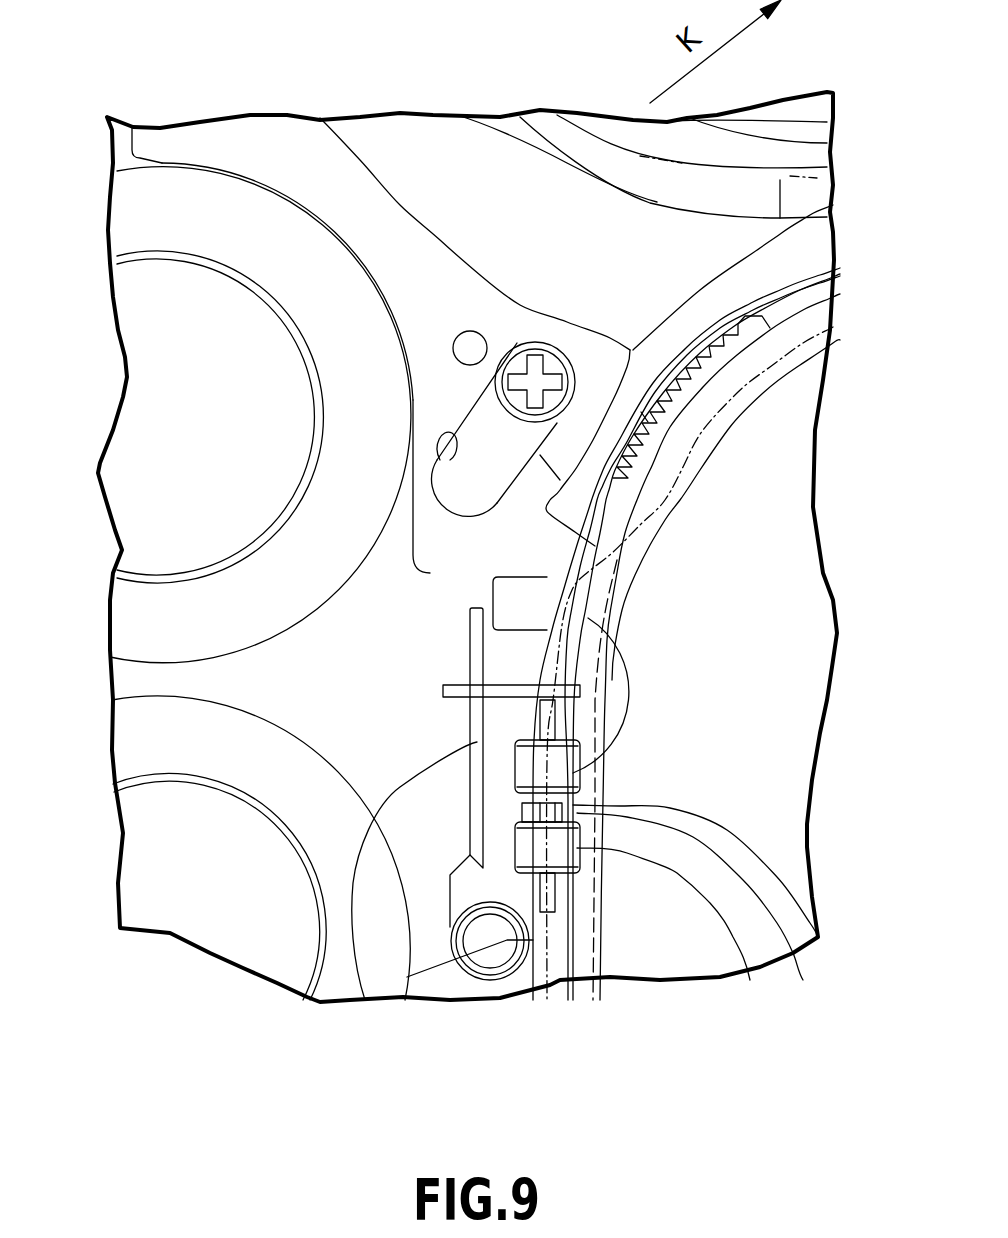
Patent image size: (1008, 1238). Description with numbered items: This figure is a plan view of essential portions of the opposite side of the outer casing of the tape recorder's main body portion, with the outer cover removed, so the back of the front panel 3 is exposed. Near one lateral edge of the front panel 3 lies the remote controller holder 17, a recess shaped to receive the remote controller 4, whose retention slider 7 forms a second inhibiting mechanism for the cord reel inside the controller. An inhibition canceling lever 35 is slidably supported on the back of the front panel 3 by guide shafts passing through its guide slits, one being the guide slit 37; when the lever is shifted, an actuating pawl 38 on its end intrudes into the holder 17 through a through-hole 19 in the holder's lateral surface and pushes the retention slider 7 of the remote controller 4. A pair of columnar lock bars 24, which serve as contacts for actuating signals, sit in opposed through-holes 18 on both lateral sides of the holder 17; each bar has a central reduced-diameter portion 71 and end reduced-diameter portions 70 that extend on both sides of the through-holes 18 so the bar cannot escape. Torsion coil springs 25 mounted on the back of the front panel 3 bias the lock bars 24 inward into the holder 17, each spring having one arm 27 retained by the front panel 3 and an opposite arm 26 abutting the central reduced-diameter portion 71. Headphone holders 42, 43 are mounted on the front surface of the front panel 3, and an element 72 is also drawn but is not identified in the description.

The front panel 3 is at (420, 130).
The remote controller 4 is at (812, 653).
The retention slider 7 is at (723, 373).
The remote controller holder 17 is at (575, 955).
The through-holes 18 is at (560, 900).
The through-hole 19 is at (430, 573).
The lock bars 24 is at (750, 980).
The torsion coil springs 25 is at (507, 982).
The opposite side arm 26 is at (818, 937).
The one arm 27 is at (365, 1000).
The inhibition canceling lever 35 is at (278, 133).
The guide slit 37 is at (453, 450).
The actuating pawl 38 is at (553, 530).
The headphone holder 42 is at (165, 387).
The headphone holder 43 is at (173, 860).
The end reduced-diameter portions 70 is at (553, 727).
The central reduced-diameter portion 71 is at (803, 980).
The screw 72 is at (527, 367).